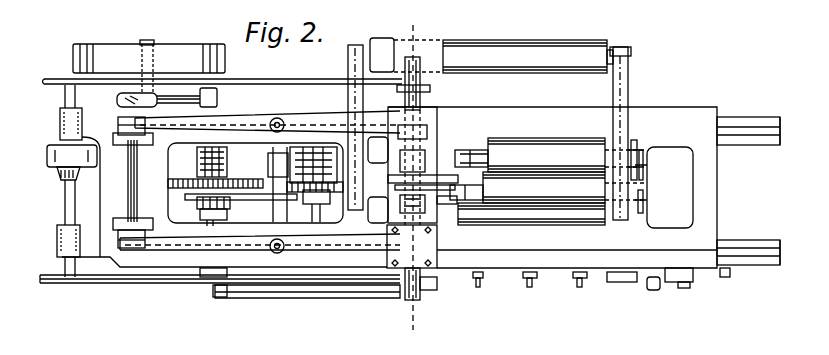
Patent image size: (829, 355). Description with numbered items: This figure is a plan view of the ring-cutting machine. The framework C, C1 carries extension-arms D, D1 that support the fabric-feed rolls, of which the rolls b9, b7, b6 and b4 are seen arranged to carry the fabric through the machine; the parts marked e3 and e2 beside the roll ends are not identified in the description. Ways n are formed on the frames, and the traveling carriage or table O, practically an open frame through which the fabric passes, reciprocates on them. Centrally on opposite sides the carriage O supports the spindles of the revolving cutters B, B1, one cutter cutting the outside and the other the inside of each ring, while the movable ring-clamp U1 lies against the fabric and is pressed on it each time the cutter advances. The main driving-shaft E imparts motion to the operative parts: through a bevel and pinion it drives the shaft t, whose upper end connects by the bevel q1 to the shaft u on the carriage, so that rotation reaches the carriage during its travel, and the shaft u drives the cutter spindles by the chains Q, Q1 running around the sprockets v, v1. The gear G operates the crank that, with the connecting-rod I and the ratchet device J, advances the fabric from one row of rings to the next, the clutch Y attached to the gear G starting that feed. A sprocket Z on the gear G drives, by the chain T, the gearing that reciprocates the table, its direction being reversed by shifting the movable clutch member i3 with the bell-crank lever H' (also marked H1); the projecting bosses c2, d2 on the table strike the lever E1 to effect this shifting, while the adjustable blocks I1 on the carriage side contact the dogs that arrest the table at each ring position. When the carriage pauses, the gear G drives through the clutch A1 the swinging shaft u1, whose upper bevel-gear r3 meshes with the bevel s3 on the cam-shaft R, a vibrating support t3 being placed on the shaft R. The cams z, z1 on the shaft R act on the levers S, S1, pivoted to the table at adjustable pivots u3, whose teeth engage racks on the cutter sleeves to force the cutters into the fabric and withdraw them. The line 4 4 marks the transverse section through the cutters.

The bevel-gear r3 is at (125, 97).
The bevel s3 is at (132, 97).
The main driving-shaft E is at (149, 54).
The lever S1 is at (231, 121).
The belt or chain Q1 is at (262, 80).
The extension-arm D is at (348, 70).
The section line 4 is at (412, 178).
The fabric-feeding roll b9 is at (553, 40).
The extension-arm D1 is at (630, 95).
The framework C1 is at (755, 117).
The ways n is at (786, 191).
The shaft u is at (64, 262).
The vibrating support t3 is at (118, 100).
The swinging shaft u1 is at (178, 108).
The cam z1 is at (124, 122).
The pivots u3 is at (293, 232).
The pulley or sprocket v1 is at (430, 88).
The revolving cutter B1 is at (432, 160).
The chain T is at (440, 176).
The disk e3 is at (638, 149).
The traveling carriage O is at (389, 187).
The disk e2 is at (650, 181).
The shaft t is at (55, 153).
The bevel q1 is at (58, 170).
The cam-shaft R is at (128, 178).
The clutch A1 is at (199, 162).
The gear G is at (247, 179).
The movable clutch member i3 is at (312, 147).
The sprocket Z is at (197, 203).
The clutch Y is at (200, 214).
The bell-crank lever H1 is at (340, 200).
The fabric-feeding roll b7 is at (551, 155).
The fabric-feeding roll b6 is at (548, 187).
The cam z is at (120, 243).
The revolving cutter B is at (428, 205).
The movable ring-clamp U1 is at (447, 204).
The fabric-feeding roll b4 is at (533, 223).
The belt or chain Q is at (128, 284).
The bell-crank lever H' is at (205, 289).
The lever S is at (252, 247).
The connecting-rod I is at (307, 300).
The ratchet device J is at (422, 290).
The pulley or sprocket v is at (437, 283).
The projecting boss d2 is at (481, 287).
The adjustable blocks I1 is at (580, 287).
The lever E1 is at (653, 290).
The projecting boss c2 is at (683, 288).
The framework C is at (748, 272).